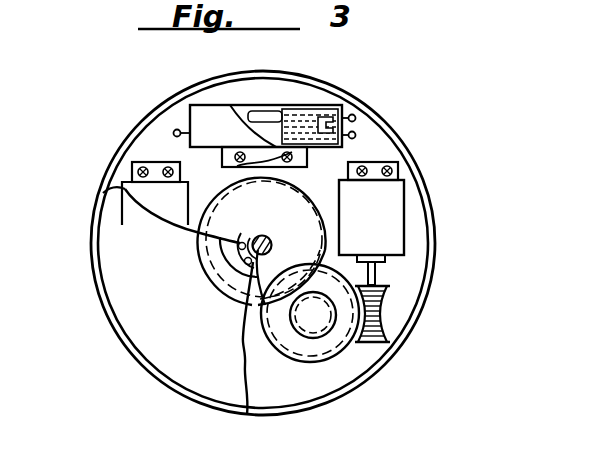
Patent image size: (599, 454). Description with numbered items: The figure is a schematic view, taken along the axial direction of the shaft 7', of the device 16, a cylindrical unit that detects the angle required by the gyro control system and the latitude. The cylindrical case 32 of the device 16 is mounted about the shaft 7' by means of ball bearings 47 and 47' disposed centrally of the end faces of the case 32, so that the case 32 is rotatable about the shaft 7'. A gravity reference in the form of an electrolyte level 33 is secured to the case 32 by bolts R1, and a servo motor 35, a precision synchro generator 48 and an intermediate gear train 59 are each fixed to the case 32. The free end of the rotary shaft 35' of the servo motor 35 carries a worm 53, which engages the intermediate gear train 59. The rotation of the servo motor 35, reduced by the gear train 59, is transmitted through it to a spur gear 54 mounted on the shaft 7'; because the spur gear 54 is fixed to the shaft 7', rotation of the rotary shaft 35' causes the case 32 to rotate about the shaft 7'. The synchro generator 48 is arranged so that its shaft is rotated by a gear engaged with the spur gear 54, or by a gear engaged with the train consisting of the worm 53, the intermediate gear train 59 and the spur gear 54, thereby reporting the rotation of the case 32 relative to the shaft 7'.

The device 16 is at (114, 97).
The cylindrical case 32 is at (142, 367).
The electrolyte level 33 is at (320, 105).
The bolts R1 is at (237, 167).
The precision synchro generator 48 is at (128, 188).
The spur gear 54 is at (297, 195).
The shaft 7' is at (268, 253).
The ball bearing 47 is at (122, 261).
The ball bearing 47' is at (284, 332).
The intermediate gear train 59 is at (340, 345).
The servo motor 35 is at (413, 208).
The rotary shaft 35' is at (425, 274).
The worm 53 is at (377, 310).